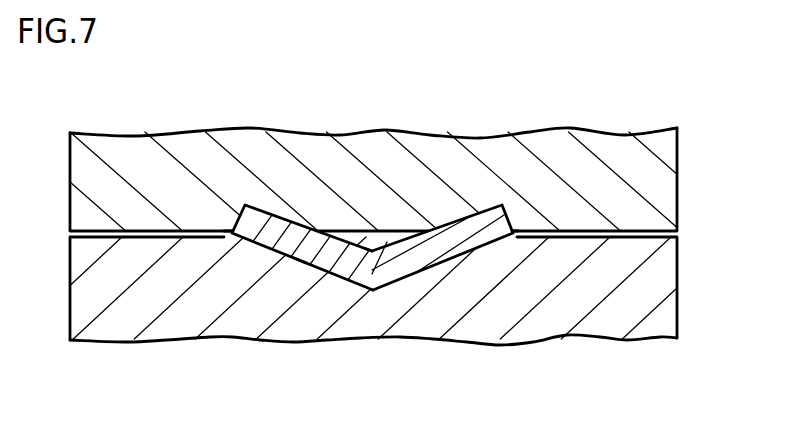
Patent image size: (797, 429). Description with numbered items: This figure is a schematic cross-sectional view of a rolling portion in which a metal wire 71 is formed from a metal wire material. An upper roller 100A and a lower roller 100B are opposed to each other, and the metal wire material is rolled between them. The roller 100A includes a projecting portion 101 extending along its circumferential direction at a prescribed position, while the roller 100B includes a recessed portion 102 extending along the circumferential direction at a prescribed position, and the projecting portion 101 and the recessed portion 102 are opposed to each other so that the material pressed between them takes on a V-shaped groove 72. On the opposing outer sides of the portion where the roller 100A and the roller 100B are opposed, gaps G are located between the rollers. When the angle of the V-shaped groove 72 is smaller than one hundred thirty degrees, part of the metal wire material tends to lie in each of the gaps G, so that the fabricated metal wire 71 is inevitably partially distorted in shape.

The roller 100A is at (640, 188).
The roller 100B is at (640, 290).
The metal wire 71 is at (273, 233).
The V-shaped groove 72 is at (418, 235).
The projecting portion 101 is at (360, 252).
The recessed portion 102 is at (299, 259).
The gap G is at (221, 237).